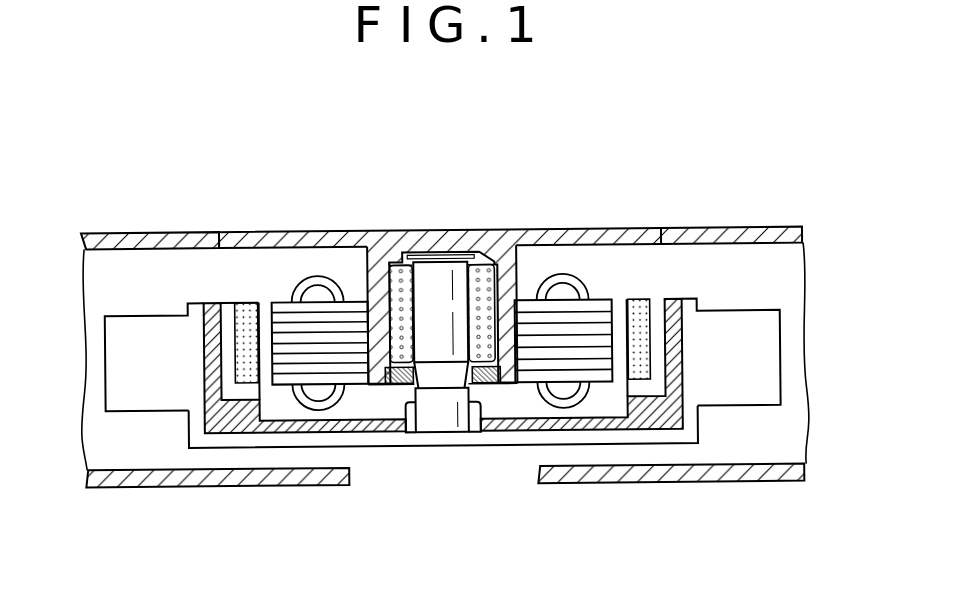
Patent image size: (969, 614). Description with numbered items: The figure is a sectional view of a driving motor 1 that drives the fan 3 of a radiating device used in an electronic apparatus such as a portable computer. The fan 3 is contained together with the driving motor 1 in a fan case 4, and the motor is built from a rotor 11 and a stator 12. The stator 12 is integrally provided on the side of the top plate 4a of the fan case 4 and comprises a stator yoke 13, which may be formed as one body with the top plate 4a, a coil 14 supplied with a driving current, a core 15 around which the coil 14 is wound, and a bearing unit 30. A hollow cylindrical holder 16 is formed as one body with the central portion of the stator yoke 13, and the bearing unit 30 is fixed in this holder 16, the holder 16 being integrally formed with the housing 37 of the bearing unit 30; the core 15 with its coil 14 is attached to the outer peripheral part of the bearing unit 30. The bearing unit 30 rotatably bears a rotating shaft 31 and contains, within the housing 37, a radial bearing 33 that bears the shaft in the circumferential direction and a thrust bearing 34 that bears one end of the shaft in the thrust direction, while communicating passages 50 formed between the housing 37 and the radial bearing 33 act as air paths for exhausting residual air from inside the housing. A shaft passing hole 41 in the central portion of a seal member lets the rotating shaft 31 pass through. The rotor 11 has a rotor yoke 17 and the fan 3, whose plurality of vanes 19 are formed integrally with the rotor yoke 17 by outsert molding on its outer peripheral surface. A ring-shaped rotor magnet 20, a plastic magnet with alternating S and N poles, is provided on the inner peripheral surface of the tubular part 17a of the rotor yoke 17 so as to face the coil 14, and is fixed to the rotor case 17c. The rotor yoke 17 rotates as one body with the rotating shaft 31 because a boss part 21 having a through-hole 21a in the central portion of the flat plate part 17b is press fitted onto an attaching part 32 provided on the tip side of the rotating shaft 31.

The driving motor 1 is at (739, 221).
The fan 3 is at (760, 336).
The fan case 4 is at (773, 470).
The top plate 4a is at (772, 238).
The rotor 11 is at (250, 445).
The stator 12 is at (240, 230).
The stator yoke 13 is at (627, 240).
The coil 14 is at (304, 294).
The core 15 is at (286, 368).
The holder 16 is at (502, 262).
The rotor yoke 17 is at (672, 424).
The tubular part 17a is at (675, 332).
The flat plate part 17b is at (507, 426).
The rotor case 17c is at (655, 322).
The vanes 19 is at (135, 369).
The rotor magnet 20 is at (243, 312).
The boss part 21 is at (479, 407).
The through-hole 21a is at (428, 420).
The bearing unit 30 is at (452, 248).
The rotating shaft 31 is at (445, 275).
The attaching part 32 is at (450, 420).
The radial bearing 33 is at (518, 288).
The thrust bearing 34 is at (420, 252).
The housing 37 is at (372, 272).
The shaft passing hole 41 is at (392, 394).
The communicating passage 50 is at (490, 290).